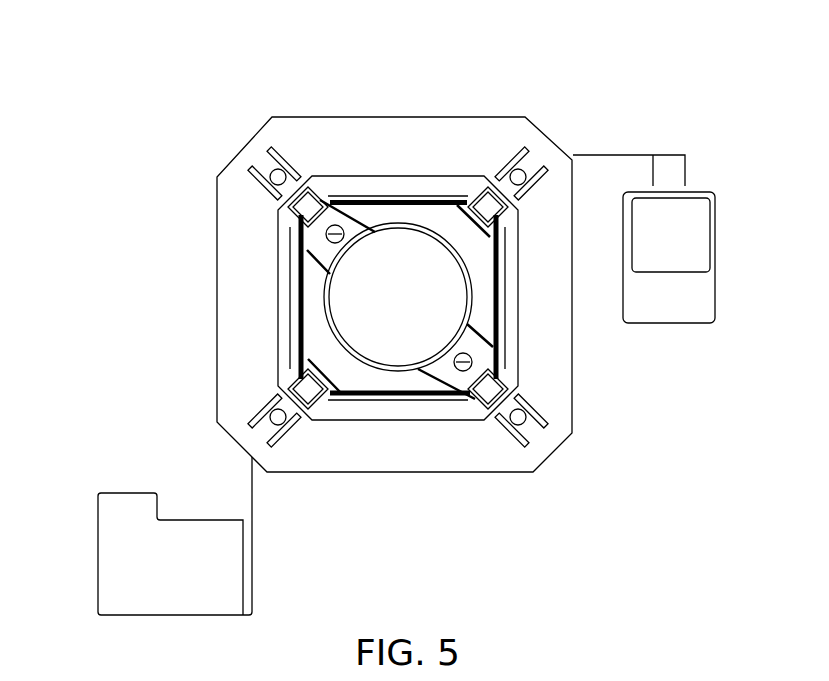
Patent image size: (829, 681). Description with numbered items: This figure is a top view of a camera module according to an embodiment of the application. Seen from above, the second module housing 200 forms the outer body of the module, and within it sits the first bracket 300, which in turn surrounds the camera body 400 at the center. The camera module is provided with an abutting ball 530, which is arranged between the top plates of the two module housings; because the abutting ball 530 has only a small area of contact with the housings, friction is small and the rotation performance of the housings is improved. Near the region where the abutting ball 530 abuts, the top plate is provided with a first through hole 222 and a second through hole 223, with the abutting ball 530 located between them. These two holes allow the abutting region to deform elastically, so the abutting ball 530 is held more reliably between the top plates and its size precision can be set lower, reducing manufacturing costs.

The second module housing 200 is at (407, 140).
The first through hole 222 is at (249, 166).
The second through hole 223 is at (292, 167).
The first bracket 300 is at (318, 386).
The camera body 400 is at (397, 337).
The abutting ball 530 is at (520, 170).